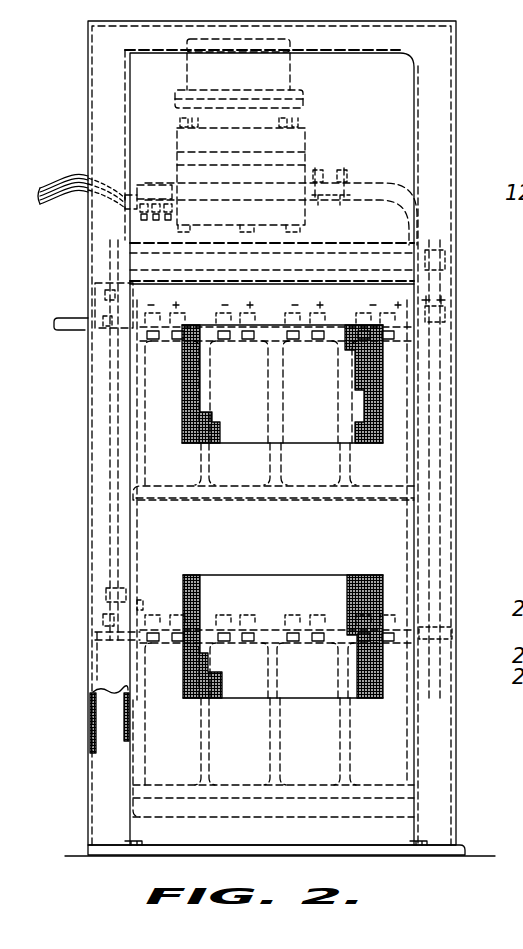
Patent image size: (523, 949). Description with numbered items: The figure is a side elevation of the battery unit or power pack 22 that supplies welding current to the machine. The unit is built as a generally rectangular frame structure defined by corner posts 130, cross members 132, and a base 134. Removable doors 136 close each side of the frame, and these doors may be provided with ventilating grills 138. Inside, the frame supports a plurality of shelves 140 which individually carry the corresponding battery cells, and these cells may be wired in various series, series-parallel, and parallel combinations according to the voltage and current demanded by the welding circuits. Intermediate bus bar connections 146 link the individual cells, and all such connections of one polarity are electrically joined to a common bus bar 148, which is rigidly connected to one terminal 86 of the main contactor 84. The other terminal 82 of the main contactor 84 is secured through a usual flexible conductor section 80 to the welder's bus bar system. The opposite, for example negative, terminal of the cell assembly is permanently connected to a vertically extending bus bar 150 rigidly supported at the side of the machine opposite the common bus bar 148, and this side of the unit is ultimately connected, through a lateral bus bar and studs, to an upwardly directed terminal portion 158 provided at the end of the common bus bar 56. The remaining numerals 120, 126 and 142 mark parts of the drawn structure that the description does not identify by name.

The power pack 22 is at (452, 122).
The common bus bar 56 is at (72, 330).
The flexible conductor section 80 is at (68, 154).
The terminal 82 is at (150, 186).
The main contactor 84 is at (284, 84).
The terminal 86 is at (327, 171).
The side panel 120 is at (474, 319).
The side channel 126 is at (474, 259).
The corner posts 130 is at (100, 118).
The cross members 132 is at (405, 252).
The base 134 is at (450, 845).
The removable doors 136 is at (400, 86).
The ventilating grills 138 is at (385, 376).
The shelves 140 is at (320, 496).
The support columns 142 is at (400, 455).
The intermediate bus bar connections 146 is at (272, 325).
The common bus bar 148 is at (450, 290).
The vertically extending bus bar 150 is at (117, 421).
The terminal portion 158 is at (90, 295).